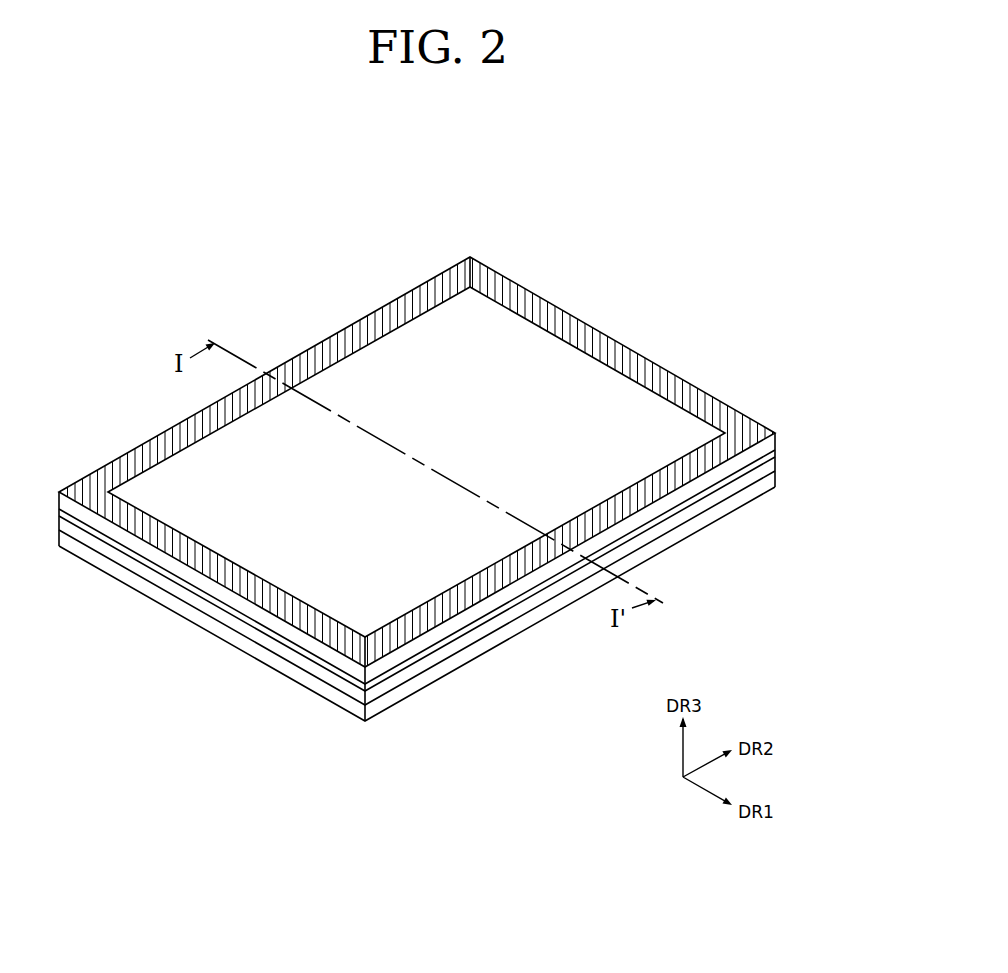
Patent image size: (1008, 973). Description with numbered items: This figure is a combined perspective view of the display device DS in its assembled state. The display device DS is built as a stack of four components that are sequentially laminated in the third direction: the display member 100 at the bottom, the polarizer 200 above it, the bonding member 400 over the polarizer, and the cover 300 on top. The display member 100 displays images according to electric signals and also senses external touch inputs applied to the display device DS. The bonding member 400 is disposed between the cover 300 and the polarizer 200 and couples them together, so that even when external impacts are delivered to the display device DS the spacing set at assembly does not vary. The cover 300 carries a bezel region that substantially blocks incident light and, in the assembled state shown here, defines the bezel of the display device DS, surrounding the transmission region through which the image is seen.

The display device DS is at (684, 317).
The display member 100 is at (775, 479).
The polarizer 200 is at (775, 465).
The cover 300 is at (775, 435).
The bonding member 400 is at (775, 451).